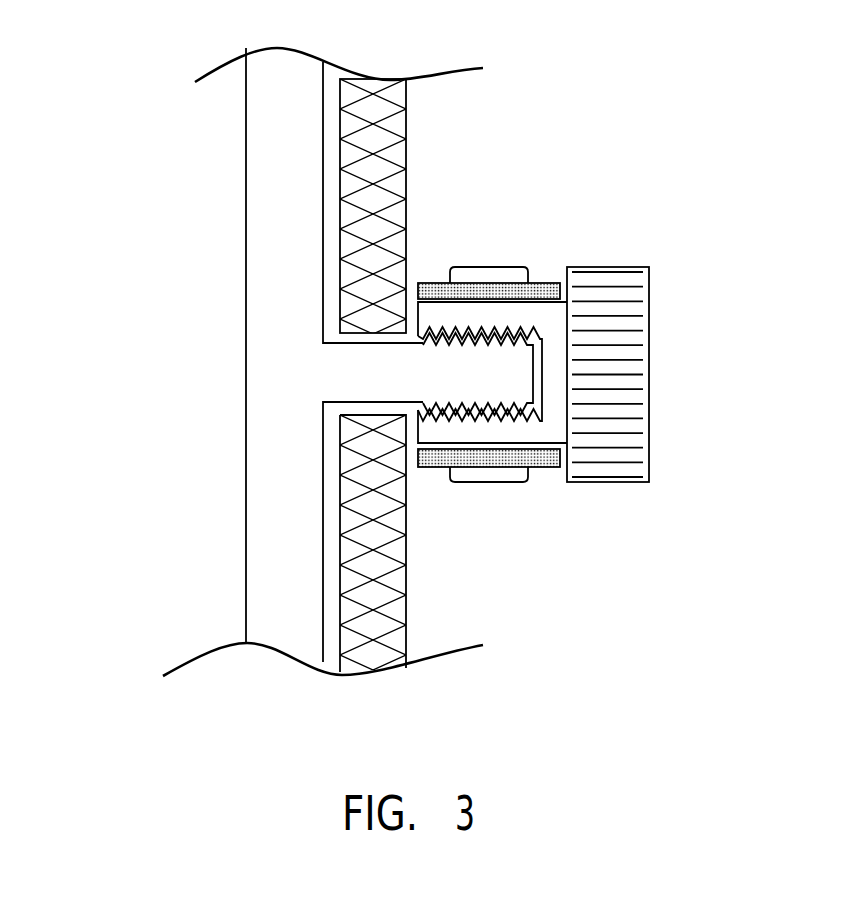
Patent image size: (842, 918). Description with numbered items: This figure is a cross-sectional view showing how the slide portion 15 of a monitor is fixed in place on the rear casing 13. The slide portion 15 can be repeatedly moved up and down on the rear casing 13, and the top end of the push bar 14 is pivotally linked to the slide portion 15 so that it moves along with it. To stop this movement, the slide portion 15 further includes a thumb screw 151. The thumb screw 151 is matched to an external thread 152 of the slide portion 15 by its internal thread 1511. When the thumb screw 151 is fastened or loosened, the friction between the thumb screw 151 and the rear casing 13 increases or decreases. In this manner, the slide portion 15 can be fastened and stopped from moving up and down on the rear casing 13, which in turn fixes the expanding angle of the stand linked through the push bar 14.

The rear casing 13 is at (376, 610).
The push bar 14 is at (503, 275).
The slide portion 15 is at (270, 217).
The thumb screw 151 is at (603, 395).
The internal thread 1511 is at (437, 452).
The external thread 152 is at (478, 372).